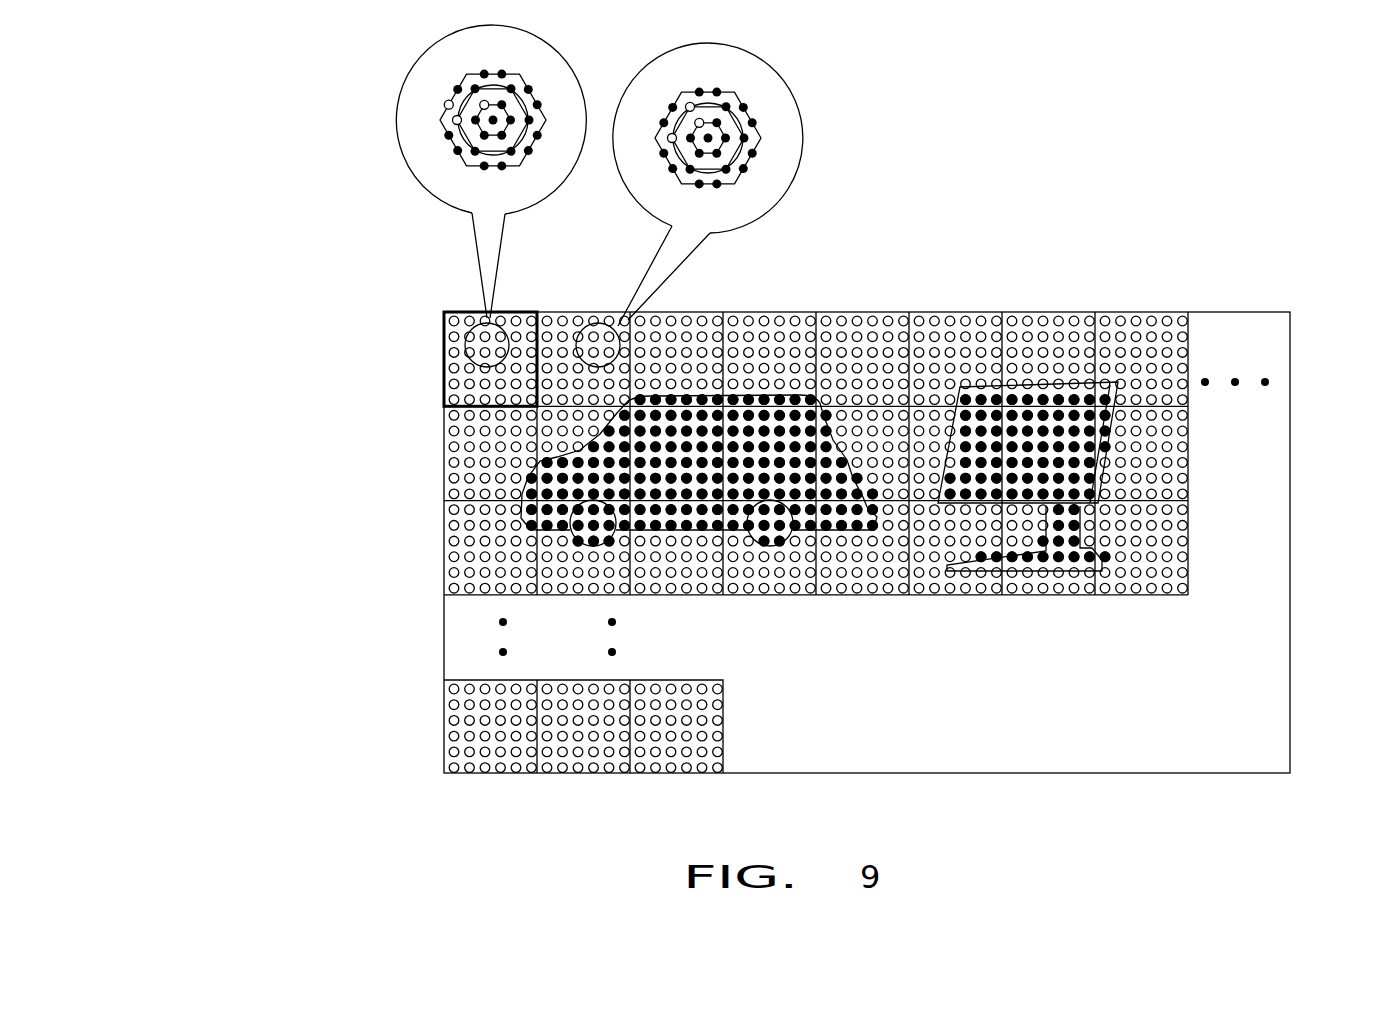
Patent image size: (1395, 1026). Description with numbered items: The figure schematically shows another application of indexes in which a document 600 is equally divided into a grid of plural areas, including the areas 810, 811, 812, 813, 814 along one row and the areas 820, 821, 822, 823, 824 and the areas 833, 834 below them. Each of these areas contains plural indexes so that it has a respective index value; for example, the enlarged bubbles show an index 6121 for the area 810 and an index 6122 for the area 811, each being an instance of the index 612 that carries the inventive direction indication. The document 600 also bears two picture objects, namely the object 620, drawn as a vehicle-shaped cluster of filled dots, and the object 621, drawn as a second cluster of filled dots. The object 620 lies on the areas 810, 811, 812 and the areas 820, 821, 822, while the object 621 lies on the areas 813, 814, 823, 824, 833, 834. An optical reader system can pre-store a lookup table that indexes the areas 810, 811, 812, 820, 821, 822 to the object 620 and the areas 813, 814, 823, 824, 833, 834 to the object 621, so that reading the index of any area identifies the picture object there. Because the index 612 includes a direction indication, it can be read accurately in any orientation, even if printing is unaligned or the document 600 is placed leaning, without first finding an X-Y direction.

The document 600 is at (947, 312).
The index 612 is at (552, 129).
The index 6121 is at (440, 121).
The index 6122 is at (770, 132).
The picture object 620 is at (627, 403).
The picture object 621 is at (1115, 427).
The area 810 is at (444, 368).
The area 811 is at (583, 311).
The area 812 is at (767, 312).
The area 813 is at (1087, 352).
The area 814 is at (1170, 398).
The area 820 is at (444, 465).
The area 821 is at (660, 532).
The area 822 is at (770, 567).
The area 823 is at (920, 490).
The area 824 is at (1110, 490).
The area 833 is at (983, 592).
The area 834 is at (1123, 568).